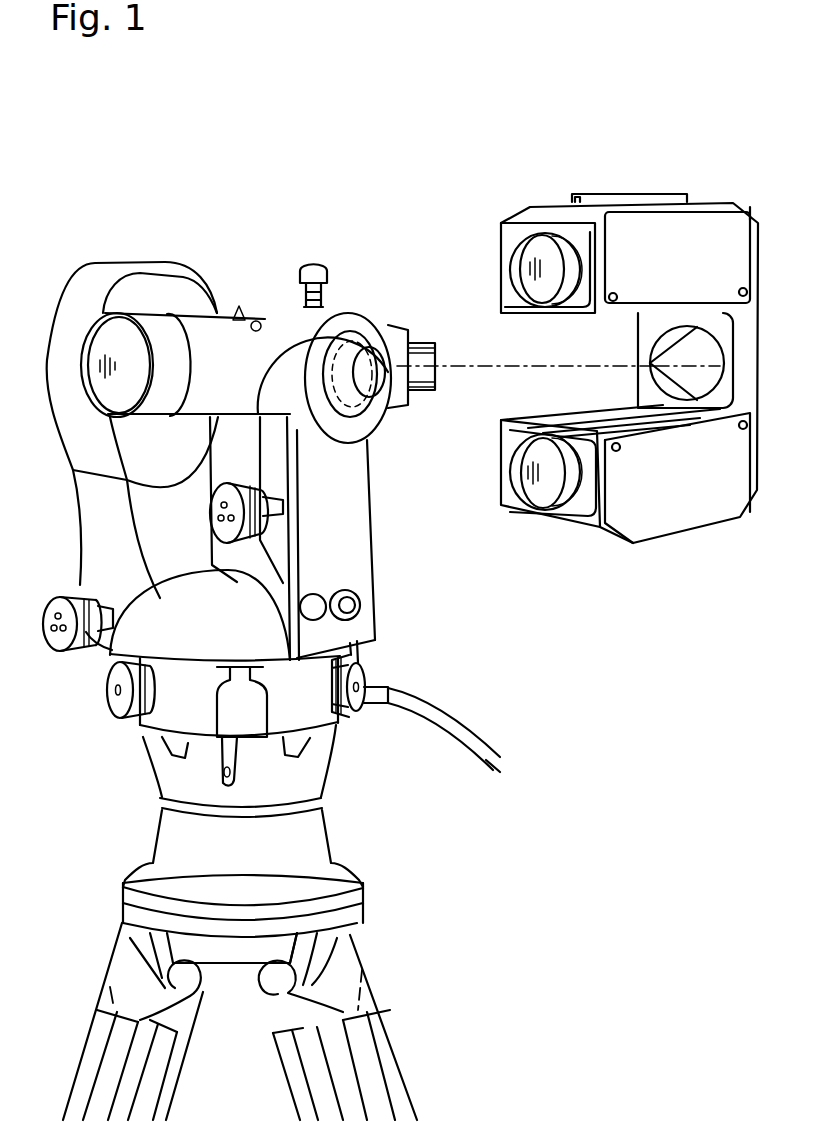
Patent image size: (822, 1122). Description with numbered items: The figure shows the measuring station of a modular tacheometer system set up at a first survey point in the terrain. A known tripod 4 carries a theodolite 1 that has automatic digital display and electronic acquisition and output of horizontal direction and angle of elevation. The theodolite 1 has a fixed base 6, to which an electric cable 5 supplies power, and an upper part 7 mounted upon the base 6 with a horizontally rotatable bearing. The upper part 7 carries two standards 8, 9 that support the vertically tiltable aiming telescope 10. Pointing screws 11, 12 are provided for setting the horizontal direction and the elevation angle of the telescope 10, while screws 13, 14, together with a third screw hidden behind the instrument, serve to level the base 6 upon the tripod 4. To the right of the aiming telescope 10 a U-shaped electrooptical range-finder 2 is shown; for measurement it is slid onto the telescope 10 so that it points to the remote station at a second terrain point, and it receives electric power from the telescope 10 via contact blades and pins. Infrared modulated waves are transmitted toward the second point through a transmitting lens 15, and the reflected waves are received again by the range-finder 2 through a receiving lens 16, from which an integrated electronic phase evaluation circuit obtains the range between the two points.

The theodolite 1 is at (340, 483).
The electrooptical range-finder 2 is at (693, 505).
The tripod 4 is at (347, 950).
The electric cable 5 is at (495, 770).
The fixed base 6 is at (178, 775).
The upper part 7 is at (137, 630).
The standard 8 is at (92, 283).
The standard 9 is at (368, 408).
The aiming telescope 10 is at (218, 338).
The pointing screw 11 is at (56, 614).
The pointing screw 12 is at (235, 515).
The levelling screw 13 is at (113, 700).
The levelling screw 14 is at (357, 703).
The transmitting lens 15 is at (540, 492).
The receiving lens 16 is at (528, 270).